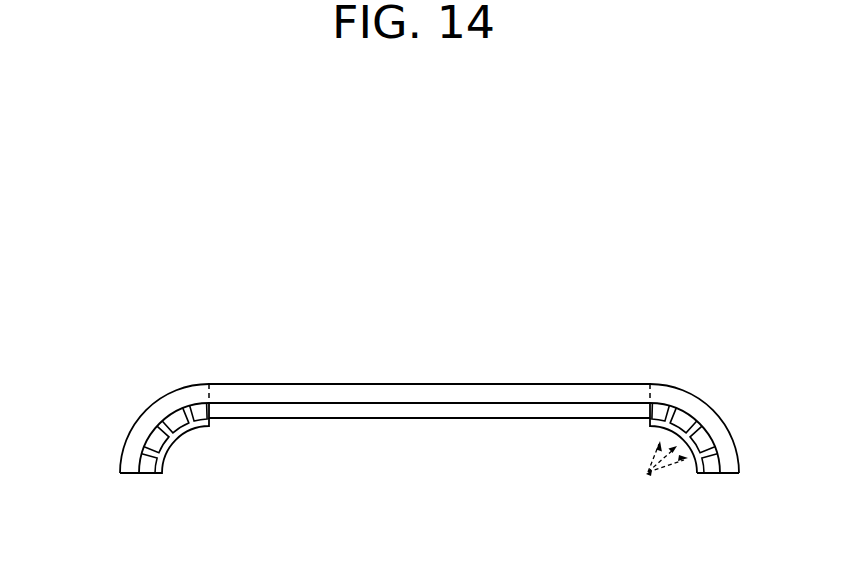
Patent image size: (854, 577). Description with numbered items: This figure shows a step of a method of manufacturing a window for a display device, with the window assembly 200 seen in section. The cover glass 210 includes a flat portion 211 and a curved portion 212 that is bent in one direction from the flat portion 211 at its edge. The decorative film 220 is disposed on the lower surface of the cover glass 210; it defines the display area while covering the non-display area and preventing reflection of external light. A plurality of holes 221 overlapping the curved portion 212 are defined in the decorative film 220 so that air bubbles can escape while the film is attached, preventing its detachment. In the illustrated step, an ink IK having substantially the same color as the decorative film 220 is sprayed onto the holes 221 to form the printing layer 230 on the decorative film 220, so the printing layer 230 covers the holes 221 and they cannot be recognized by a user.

The display device 200 is at (191, 211).
The cover glass 210 is at (257, 319).
The flat portion 211 is at (240, 396).
The curved portion 212 is at (185, 396).
The decorative film 220 is at (355, 412).
The holes 221 is at (144, 449).
The printing layer 230 is at (194, 430).
The ink IK is at (655, 470).